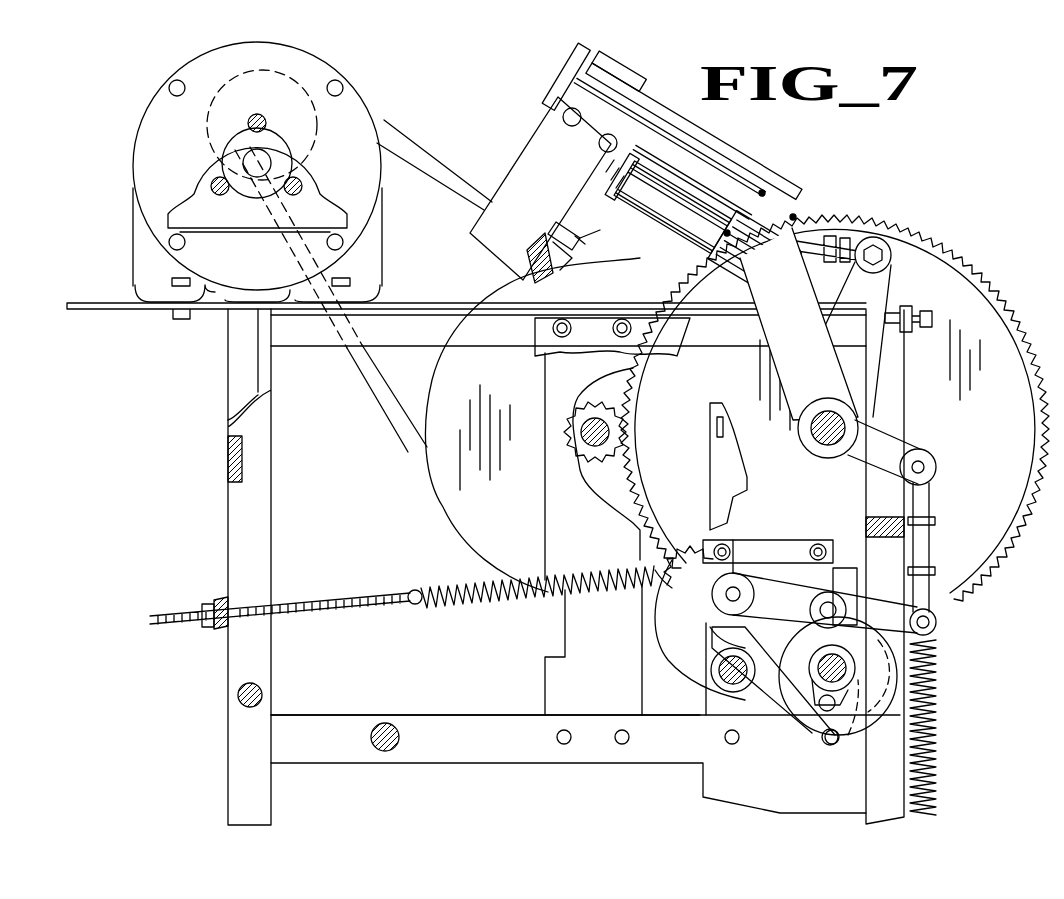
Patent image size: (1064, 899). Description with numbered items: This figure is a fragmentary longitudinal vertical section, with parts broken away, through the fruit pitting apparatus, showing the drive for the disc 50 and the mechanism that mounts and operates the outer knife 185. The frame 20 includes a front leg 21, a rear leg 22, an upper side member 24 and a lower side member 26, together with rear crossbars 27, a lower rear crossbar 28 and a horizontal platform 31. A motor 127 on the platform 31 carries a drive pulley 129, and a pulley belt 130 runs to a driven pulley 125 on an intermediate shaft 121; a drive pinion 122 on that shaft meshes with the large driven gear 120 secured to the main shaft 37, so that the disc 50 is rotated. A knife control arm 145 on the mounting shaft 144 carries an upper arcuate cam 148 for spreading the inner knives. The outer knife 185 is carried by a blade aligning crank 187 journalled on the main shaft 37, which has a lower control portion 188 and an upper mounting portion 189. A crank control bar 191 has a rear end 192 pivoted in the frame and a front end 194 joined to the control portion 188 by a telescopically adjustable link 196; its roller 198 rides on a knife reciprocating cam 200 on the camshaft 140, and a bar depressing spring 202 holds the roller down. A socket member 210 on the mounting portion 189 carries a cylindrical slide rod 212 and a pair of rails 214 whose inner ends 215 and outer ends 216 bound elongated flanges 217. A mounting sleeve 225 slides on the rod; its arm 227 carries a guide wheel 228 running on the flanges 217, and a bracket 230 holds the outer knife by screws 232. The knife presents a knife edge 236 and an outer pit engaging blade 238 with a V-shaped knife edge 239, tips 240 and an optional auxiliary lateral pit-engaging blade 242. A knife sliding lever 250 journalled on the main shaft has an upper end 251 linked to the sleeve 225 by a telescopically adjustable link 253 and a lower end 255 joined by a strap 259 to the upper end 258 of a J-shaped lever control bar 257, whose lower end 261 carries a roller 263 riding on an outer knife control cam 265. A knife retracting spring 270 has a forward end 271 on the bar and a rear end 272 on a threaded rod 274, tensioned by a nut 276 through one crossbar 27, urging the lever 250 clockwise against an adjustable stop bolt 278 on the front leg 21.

The frame 20 is at (224, 734).
The front legs 21 is at (893, 395).
The rear legs 22 is at (262, 418).
The upper side members 24 is at (426, 346).
The lower side members 26 is at (484, 730).
The rear crossbars 27 is at (227, 462).
The lower rear crossbar 28 is at (382, 728).
The platform 31 is at (110, 316).
The main shaft 37 is at (835, 430).
The disc 50 is at (920, 228).
The driven gear 120 is at (940, 272).
The intermediate shaft 121 is at (610, 422).
The drive pinion 122 is at (620, 440).
The driven pulley 125 is at (532, 425).
The motor 127 is at (148, 128).
The drive pulley 129 is at (300, 47).
The pulley belt 130 is at (343, 220).
The camshaft 140 is at (850, 676).
The mounting shaft 144 is at (718, 678).
The knife control arm 145 is at (740, 520).
The upper arcuate cams 148 is at (728, 438).
The outer knife 185 is at (462, 244).
The blade aligning crank 187 is at (796, 366).
The lower control portion 188 is at (905, 446).
The upper mounting portion 189 is at (778, 346).
The crank control bar 191 is at (936, 615).
The rear end 192 is at (740, 598).
The front end 194 is at (936, 622).
The telescopically adjustable link 196 is at (928, 548).
The roller 198 is at (834, 600).
The knife reciprocating cam 200 is at (905, 694).
The bar depressing spring 202 is at (900, 708).
The socket member 210 is at (806, 270).
The cylindrical slide rod 212 is at (680, 200).
The rails 214 is at (702, 142).
The inner ends 215 is at (775, 210).
The outer ends 216 is at (582, 67).
The elongated flanges 217 is at (606, 66).
The mounting sleeve 225 is at (584, 100).
The arm 227 is at (640, 126).
The guide wheel 228 is at (660, 70).
The bracket 230 is at (620, 120).
The screws 232 is at (608, 147).
The knife edge 236 is at (595, 192).
The outer pit engaging blade 238 is at (576, 278).
The V-shaped knife edge 239 is at (568, 236).
The tips 240 is at (596, 242).
The auxiliary lateral pit-engaging blade 242 is at (568, 218).
The knife sliding lever 250 is at (857, 327).
The upper end 251 is at (876, 272).
The telescopically adjustable link 253 is at (708, 182).
The lower end 255 is at (810, 525).
The J-shaped lever control bar 257 is at (670, 608).
The upper end 258 is at (702, 550).
The strap 259 is at (768, 551).
The lower end 261 is at (760, 708).
The roller 263 is at (822, 738).
The outer knife control cam 265 is at (845, 748).
The knife retracting spring 270 is at (498, 600).
The forward end 271 is at (660, 552).
The rear end 272 is at (416, 610).
The threaded rod 274 is at (185, 628).
The nut 276 is at (210, 635).
The adjustable stop bolt 278 is at (948, 300).